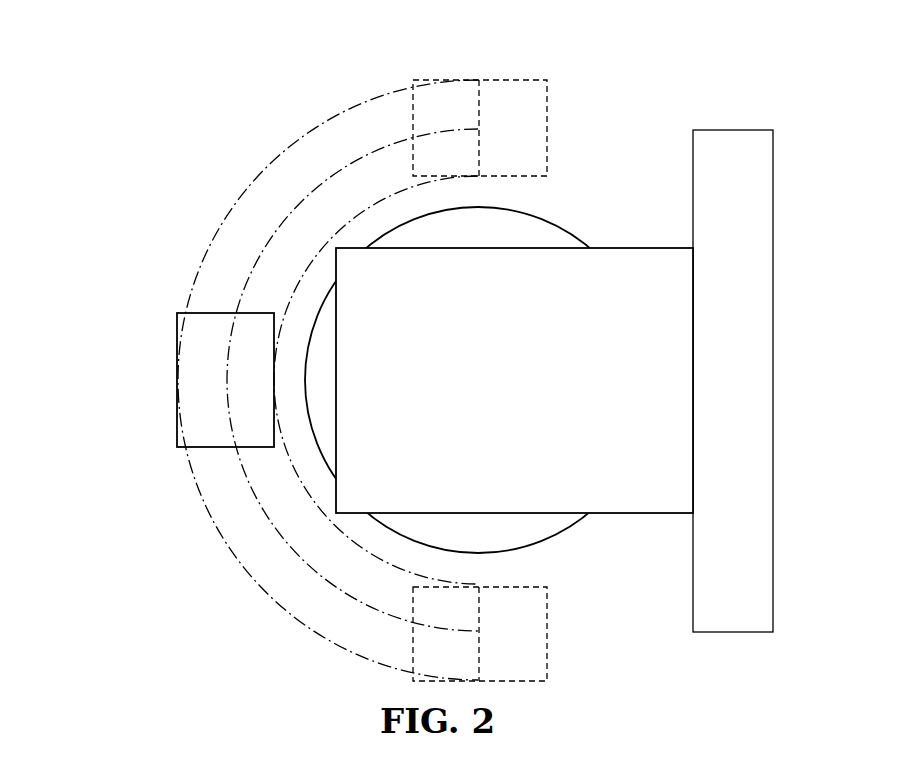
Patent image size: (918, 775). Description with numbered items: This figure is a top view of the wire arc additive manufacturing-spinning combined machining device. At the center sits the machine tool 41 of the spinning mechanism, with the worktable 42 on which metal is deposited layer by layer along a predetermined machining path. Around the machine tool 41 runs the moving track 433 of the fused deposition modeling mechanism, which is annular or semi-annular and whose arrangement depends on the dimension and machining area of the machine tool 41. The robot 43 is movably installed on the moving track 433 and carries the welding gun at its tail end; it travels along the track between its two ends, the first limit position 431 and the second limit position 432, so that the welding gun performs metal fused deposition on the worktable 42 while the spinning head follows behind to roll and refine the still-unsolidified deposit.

The machine tool 41 is at (405, 383).
The worktable 42 is at (449, 532).
The robot 43 is at (220, 382).
The first limit position 431 is at (508, 137).
The second limit position 432 is at (513, 605).
The moving track 433 is at (285, 190).